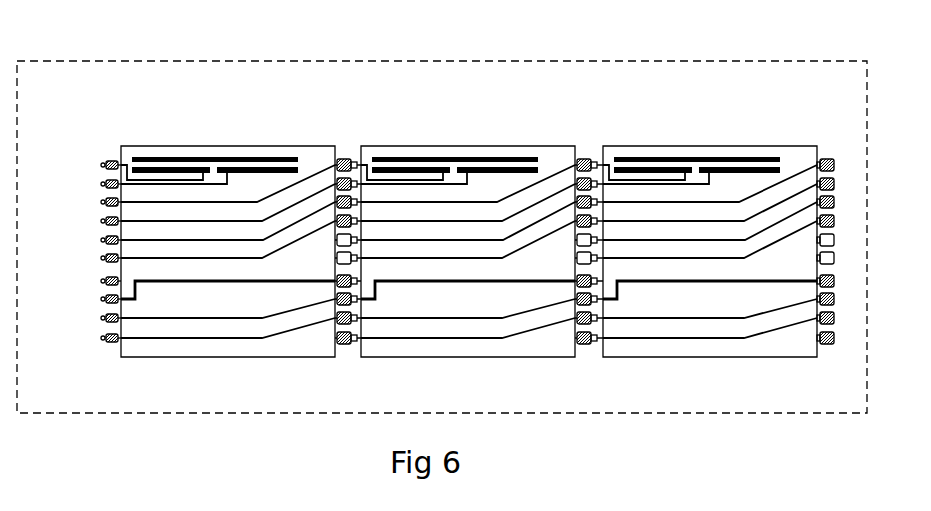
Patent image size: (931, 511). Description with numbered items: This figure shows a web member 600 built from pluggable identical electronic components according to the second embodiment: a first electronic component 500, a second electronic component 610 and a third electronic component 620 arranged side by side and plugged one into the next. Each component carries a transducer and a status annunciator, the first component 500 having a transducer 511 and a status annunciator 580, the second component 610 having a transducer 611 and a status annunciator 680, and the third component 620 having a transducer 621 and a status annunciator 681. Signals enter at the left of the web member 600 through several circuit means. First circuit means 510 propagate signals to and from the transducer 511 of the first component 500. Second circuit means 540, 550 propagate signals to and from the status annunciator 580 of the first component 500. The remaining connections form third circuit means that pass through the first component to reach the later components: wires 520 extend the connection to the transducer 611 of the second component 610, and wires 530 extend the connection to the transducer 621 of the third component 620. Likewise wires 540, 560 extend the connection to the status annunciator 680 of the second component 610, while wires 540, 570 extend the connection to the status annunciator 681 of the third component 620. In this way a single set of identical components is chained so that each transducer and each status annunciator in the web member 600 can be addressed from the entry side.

The web member 600 is at (365, 60).
The first electronic component 500 is at (293, 143).
The transducer 511 is at (182, 156).
The status annunciator 580 is at (150, 299).
The first circuit means 510 is at (106, 182).
The wires 520 is at (106, 219).
The wires 530 is at (106, 257).
The second circuit means 540 is at (103, 280).
The second circuit means 550 is at (103, 298).
The wires 560 is at (103, 319).
The wires 570 is at (107, 341).
The second electronic component 610 is at (543, 143).
The transducer 611 is at (418, 156).
The status annunciator 680 is at (382, 297).
The third electronic component 620 is at (785, 140).
The transducer 621 is at (657, 158).
The status annunciator 681 is at (622, 303).